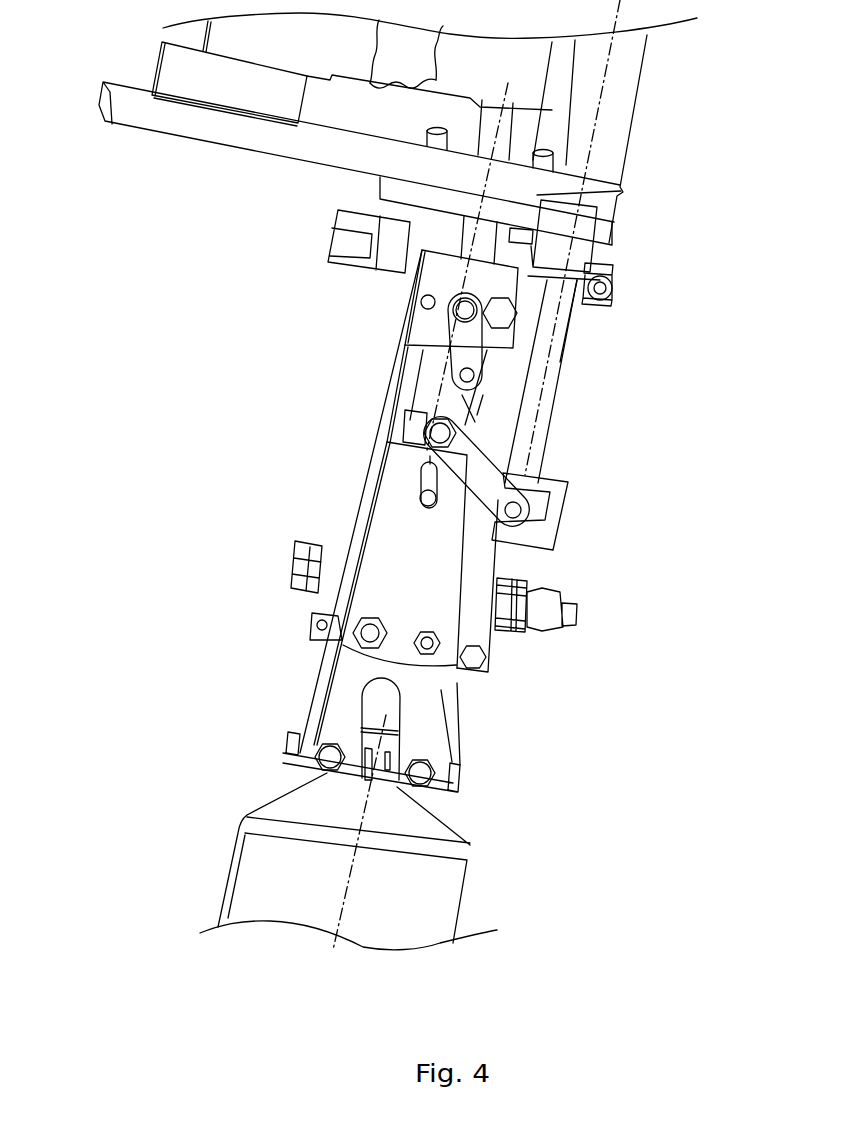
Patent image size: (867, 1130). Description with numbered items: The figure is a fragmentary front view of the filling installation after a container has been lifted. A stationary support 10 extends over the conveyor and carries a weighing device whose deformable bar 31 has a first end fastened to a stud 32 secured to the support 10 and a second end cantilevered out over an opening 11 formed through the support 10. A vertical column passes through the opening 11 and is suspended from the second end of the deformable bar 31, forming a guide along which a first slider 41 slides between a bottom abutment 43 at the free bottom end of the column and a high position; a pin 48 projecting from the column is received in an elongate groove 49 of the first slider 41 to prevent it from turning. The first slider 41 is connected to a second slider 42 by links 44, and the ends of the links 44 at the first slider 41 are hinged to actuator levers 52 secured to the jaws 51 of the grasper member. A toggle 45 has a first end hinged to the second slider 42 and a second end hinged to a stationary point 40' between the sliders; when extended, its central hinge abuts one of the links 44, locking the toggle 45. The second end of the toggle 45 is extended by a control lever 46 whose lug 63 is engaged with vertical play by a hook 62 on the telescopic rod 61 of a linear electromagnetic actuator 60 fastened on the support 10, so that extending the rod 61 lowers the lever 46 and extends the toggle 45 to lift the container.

The support 10 is at (123, 121).
The opening 11 is at (598, 160).
The deformable bar 31 is at (347, 72).
The stud 32 is at (162, 68).
The stationary point 40' is at (400, 266).
The first slider 41 is at (345, 568).
The second slider 42 is at (600, 280).
The bottom abutment 43 is at (413, 427).
The links 44 is at (366, 480).
The toggle 45 is at (570, 362).
The control lever 46 is at (473, 455).
The pin 48 is at (430, 500).
The elongate groove 49 is at (423, 478).
The jaws 51 is at (285, 745).
The actuator lever 52 is at (330, 642).
The actuator 60 is at (633, 58).
The telescopic rod 61 is at (548, 394).
The hook 62 is at (558, 528).
The lug 63 is at (520, 512).